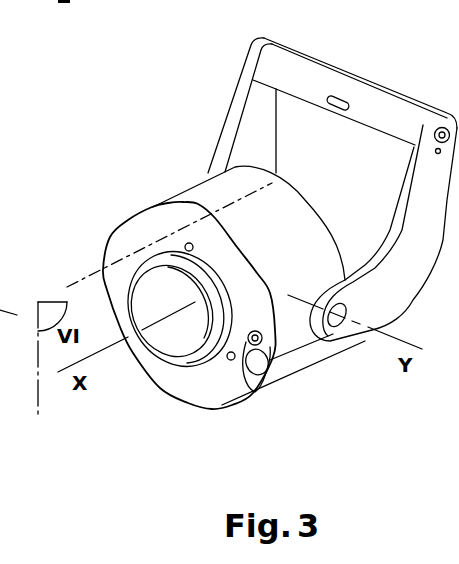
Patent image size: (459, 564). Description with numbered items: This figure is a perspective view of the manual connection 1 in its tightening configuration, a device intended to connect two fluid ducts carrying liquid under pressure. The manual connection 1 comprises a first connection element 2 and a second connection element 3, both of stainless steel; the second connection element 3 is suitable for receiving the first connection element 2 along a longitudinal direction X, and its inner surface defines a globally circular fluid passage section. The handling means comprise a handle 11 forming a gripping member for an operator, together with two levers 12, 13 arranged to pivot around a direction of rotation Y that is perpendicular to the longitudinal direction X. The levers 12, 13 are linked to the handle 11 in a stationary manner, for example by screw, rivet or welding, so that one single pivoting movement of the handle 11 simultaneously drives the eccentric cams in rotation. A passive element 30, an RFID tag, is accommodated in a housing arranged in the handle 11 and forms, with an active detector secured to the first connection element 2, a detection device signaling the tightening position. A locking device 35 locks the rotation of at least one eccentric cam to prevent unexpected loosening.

The manual connection 1 is at (332, 242).
The first connection element 2 is at (172, 348).
The second connection element 3 is at (234, 273).
The handle 11 is at (290, 75).
The lever 12 is at (428, 198).
The lever 13 is at (255, 115).
The passive element 30 is at (340, 96).
The locking device 35 is at (259, 394).